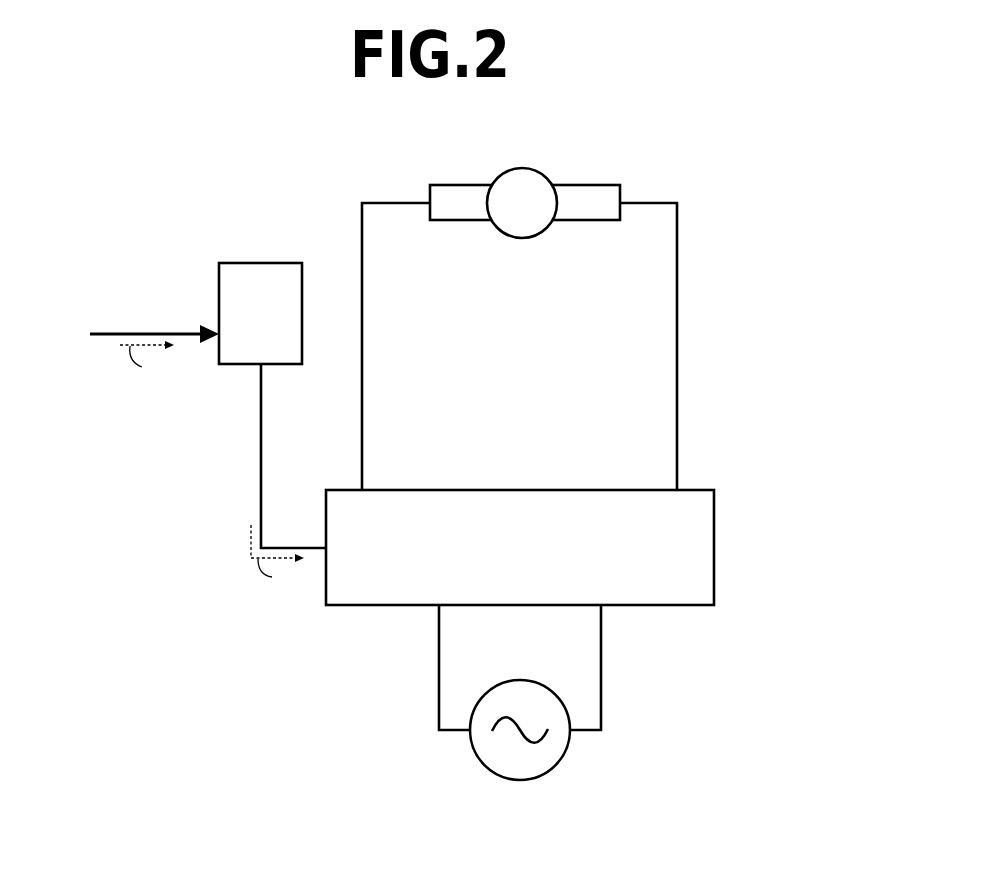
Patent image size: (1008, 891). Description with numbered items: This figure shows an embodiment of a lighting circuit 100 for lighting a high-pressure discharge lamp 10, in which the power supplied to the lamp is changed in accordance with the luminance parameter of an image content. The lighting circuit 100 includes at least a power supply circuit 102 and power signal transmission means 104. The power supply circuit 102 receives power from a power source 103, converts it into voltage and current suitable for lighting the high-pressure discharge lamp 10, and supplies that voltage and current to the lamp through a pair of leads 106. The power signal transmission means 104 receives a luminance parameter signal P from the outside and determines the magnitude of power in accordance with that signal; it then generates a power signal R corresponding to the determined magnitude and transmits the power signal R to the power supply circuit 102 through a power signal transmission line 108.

The high-pressure discharge lamp 10 is at (600, 160).
The lighting circuit 100 is at (476, 468).
The power supply circuit 102 is at (647, 606).
The power source 103 is at (542, 780).
The power signal transmission means 104 is at (219, 283).
The pair of leads 106 is at (362, 275).
The power signal transmission line 108 is at (261, 512).